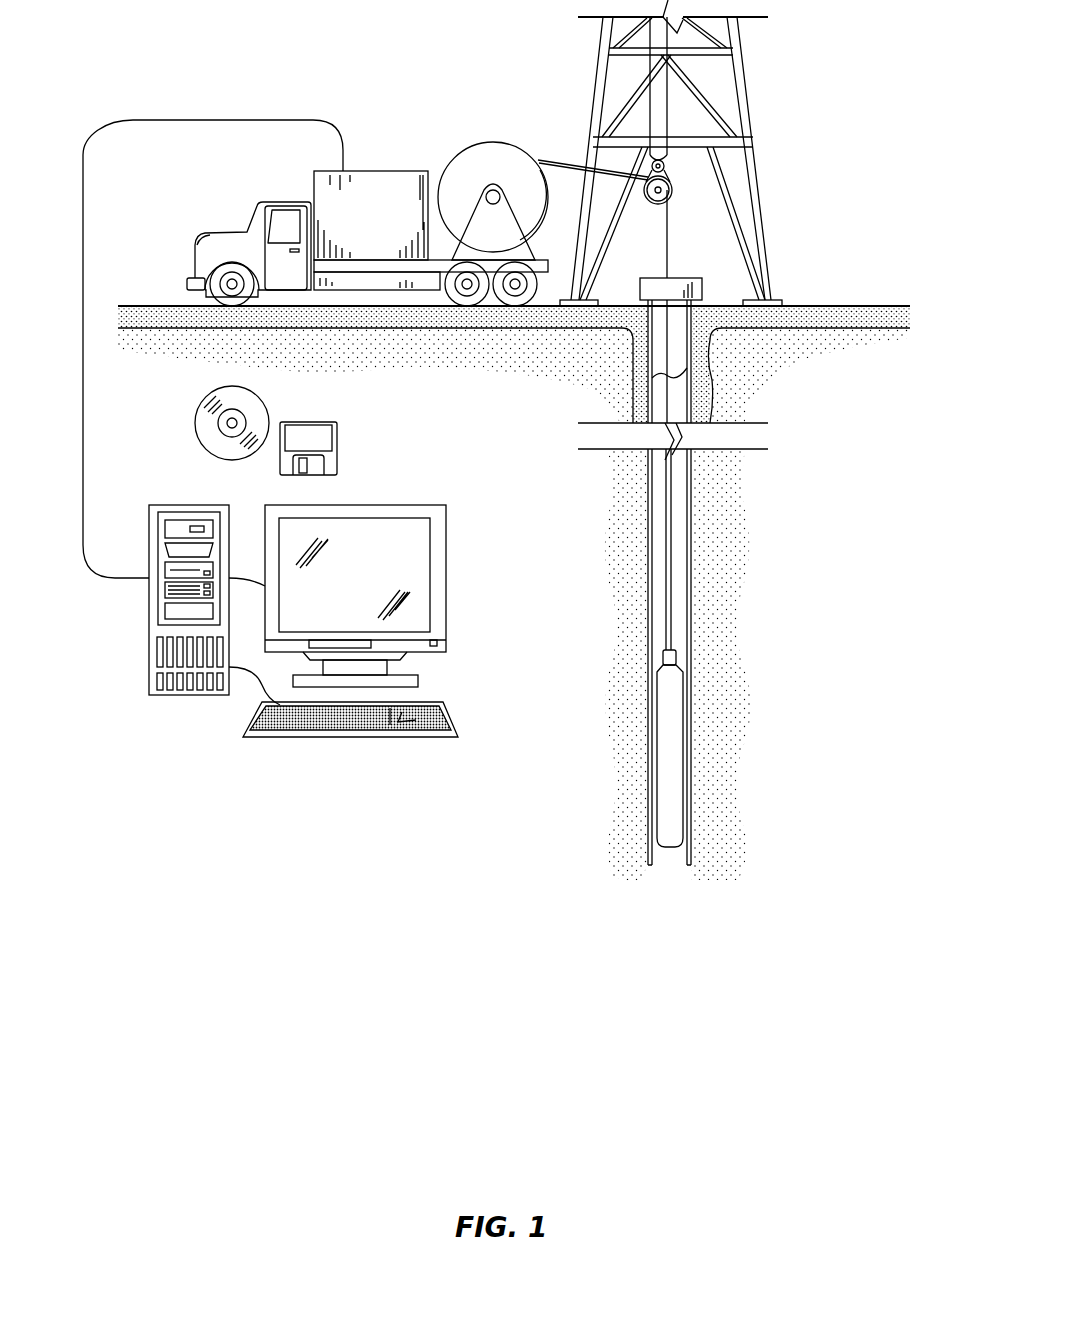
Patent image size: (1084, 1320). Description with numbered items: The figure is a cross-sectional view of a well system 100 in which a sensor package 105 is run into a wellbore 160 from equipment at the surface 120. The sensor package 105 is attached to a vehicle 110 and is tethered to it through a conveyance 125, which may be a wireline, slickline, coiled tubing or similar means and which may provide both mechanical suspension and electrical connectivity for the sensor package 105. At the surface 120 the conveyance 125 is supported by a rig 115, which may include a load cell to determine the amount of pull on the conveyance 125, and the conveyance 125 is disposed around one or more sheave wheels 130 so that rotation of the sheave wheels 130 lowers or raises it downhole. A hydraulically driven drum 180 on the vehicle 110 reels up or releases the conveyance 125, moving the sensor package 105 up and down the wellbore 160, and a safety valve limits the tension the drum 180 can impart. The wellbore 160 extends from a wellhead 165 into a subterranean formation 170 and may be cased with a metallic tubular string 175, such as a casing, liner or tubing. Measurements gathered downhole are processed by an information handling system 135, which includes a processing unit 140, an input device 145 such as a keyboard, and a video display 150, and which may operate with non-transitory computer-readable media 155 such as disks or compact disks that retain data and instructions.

The well system 100 is at (252, 45).
The sensor package 105 is at (641, 763).
The vehicle 110 is at (378, 171).
The rig 115 is at (757, 170).
The surface 120 is at (858, 306).
The conveyance 125 is at (668, 530).
The sheave wheel 130 is at (660, 205).
The information handling system 135 is at (151, 759).
The processing unit 140 is at (186, 505).
The input device 145 is at (458, 718).
The video display 150 is at (387, 505).
The non-transitory computer-readable media 155 is at (258, 395).
The wellbore 160 is at (700, 410).
The wellhead 165 is at (710, 288).
The subterranean formation 170 is at (852, 478).
The tubular string 175 is at (656, 368).
The drum 180 is at (493, 142).